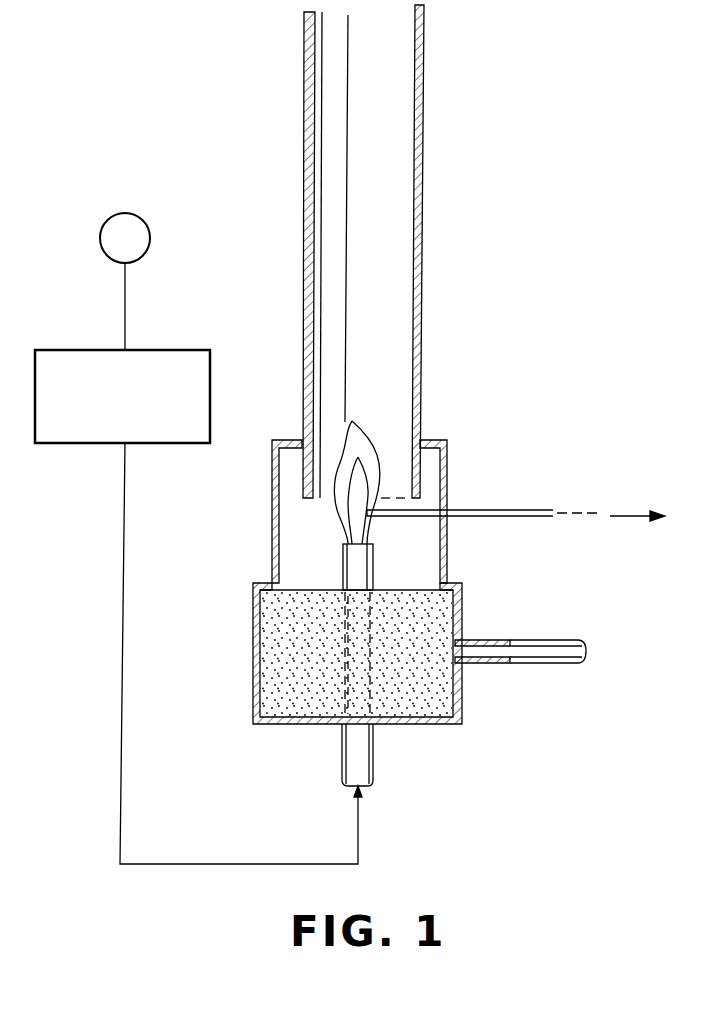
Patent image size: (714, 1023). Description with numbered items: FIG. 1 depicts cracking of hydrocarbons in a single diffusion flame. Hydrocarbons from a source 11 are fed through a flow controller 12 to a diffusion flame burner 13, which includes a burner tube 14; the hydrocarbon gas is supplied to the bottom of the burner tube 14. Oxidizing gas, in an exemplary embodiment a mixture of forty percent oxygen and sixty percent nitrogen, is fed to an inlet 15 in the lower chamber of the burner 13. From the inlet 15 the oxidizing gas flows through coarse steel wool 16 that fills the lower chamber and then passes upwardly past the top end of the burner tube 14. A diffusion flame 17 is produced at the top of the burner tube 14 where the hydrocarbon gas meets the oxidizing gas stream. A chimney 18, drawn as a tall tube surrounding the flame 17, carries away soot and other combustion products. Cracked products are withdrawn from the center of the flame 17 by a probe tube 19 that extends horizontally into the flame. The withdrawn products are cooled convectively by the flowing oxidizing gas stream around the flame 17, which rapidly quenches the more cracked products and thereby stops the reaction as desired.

The source 11 is at (101, 232).
The flow controller 12 is at (172, 350).
The diffusion flame burner 13 is at (302, 756).
The burner tube 14 is at (357, 742).
The inlet 15 is at (534, 645).
The coarse steel wool 16 is at (428, 618).
The diffusion flame 17 is at (378, 462).
The chimney 18 is at (423, 344).
The probe tube 19 is at (493, 510).